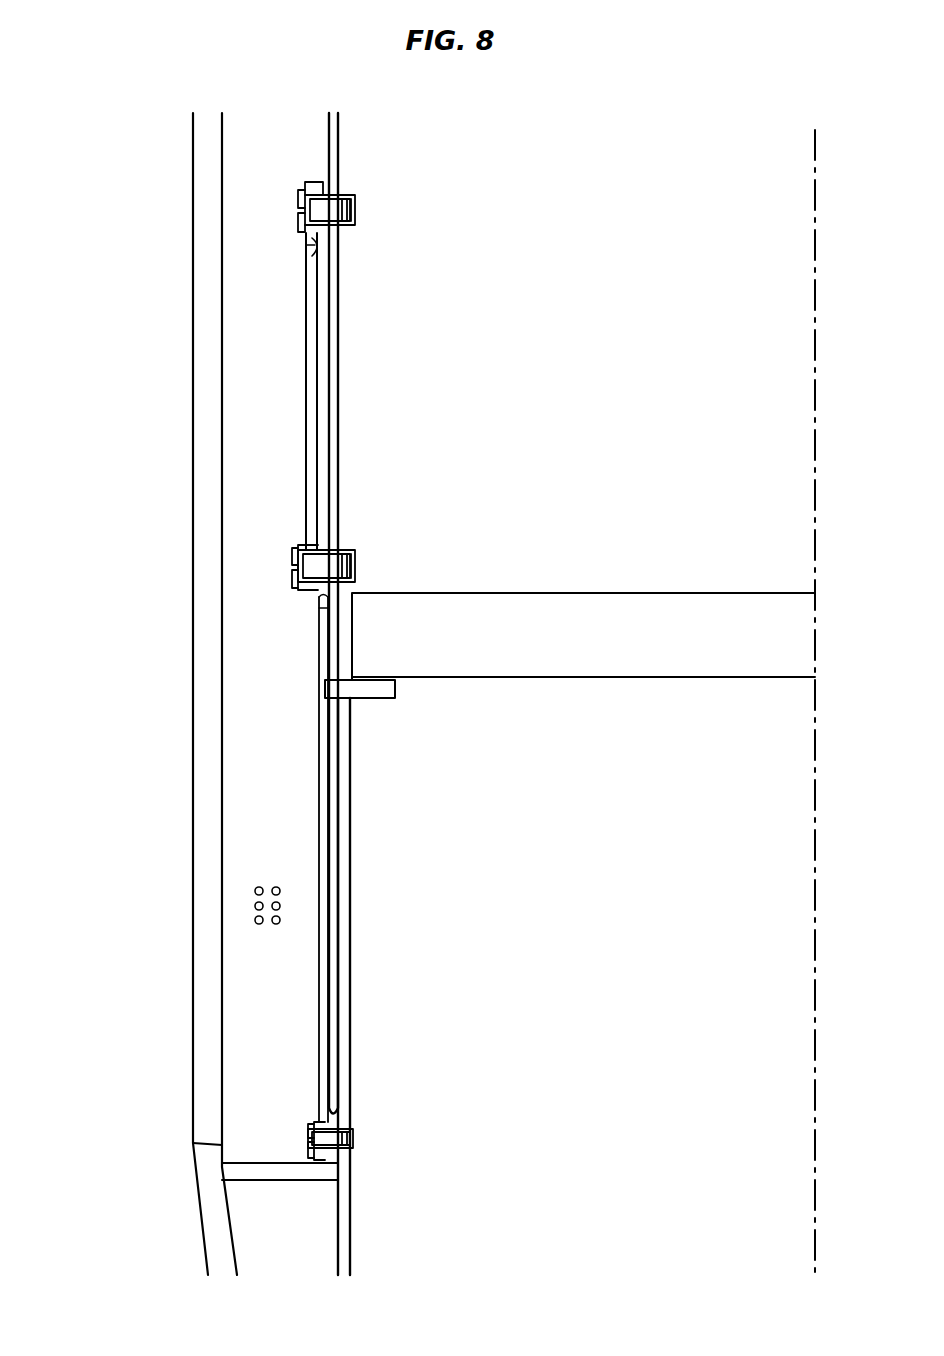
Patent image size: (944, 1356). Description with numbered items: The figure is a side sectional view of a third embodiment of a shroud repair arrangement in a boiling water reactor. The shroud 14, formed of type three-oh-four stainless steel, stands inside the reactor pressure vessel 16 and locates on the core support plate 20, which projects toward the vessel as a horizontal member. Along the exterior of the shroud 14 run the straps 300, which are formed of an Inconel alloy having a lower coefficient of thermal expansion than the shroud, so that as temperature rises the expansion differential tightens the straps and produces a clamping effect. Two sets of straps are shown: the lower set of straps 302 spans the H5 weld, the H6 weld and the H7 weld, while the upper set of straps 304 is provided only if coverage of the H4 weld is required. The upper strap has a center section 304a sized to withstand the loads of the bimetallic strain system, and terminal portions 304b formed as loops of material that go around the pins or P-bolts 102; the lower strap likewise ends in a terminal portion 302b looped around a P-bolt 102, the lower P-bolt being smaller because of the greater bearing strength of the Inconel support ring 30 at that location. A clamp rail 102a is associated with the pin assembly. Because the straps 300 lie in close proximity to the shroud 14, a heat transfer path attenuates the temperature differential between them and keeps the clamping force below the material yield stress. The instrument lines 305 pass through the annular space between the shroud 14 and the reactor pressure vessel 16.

The shroud 14 is at (330, 146).
The reactor pressure vessel 16 is at (205, 582).
The core support plate 20 is at (572, 650).
The support ring 30 is at (240, 1170).
The P-bolt 102 is at (290, 223).
The clamp rail 102a is at (318, 1030).
The straps 300 is at (245, 745).
The lower set of straps 302 is at (340, 868).
The terminal portion of lower strap 302b is at (322, 590).
The upper set of straps 304 is at (332, 453).
The center section of upper strap 304a is at (313, 352).
The terminal portion of upper strap 304b is at (316, 248).
The instrument lines 305 is at (245, 905).
The H4 weld H4 is at (338, 250).
The H5 weld H5 is at (333, 673).
The H6 weld H6 is at (352, 698).
The H7 weld H7 is at (342, 1113).